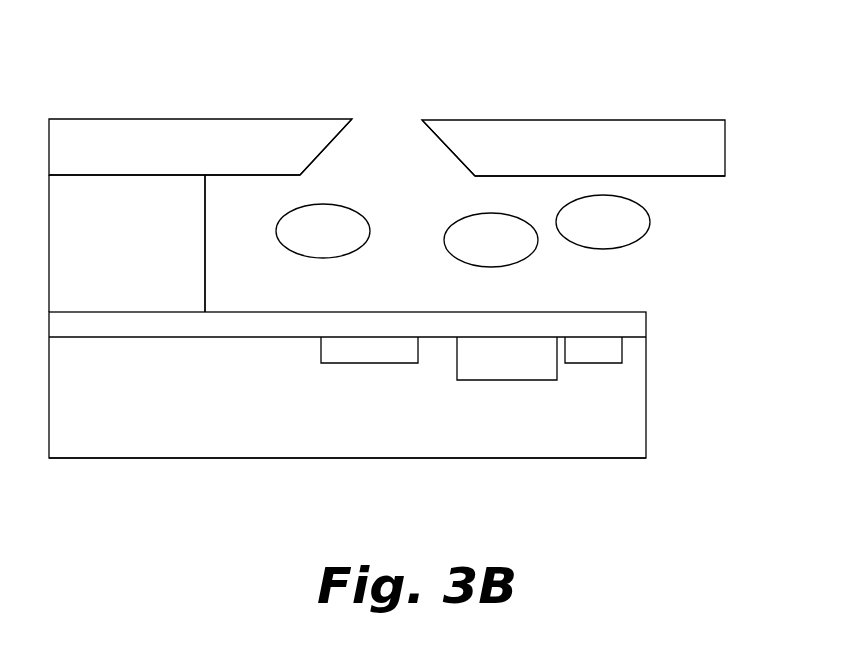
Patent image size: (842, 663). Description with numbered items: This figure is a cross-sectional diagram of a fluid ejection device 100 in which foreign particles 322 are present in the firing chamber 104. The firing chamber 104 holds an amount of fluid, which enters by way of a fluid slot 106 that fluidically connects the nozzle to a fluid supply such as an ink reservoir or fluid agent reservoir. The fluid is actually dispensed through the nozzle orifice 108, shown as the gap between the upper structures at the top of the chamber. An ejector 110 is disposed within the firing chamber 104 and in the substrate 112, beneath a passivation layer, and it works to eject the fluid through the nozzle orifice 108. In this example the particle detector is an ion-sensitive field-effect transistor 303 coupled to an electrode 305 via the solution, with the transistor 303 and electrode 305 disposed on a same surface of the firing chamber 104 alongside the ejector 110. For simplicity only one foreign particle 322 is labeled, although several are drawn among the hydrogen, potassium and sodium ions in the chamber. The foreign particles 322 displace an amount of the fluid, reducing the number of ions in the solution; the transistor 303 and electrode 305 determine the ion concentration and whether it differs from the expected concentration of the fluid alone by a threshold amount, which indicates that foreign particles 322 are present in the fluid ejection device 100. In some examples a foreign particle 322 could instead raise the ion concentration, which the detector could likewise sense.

The fluid ejection device 100 is at (196, 78).
The firing chamber 104 is at (267, 262).
The fluid slot 106 is at (693, 445).
The nozzle orifice 108 is at (390, 155).
The ejector 110 is at (372, 355).
The substrate 112 is at (613, 428).
The ion-sensitive field-effect transistor 303 is at (527, 370).
The electrode 305 is at (617, 360).
The foreign particle 322 is at (635, 220).